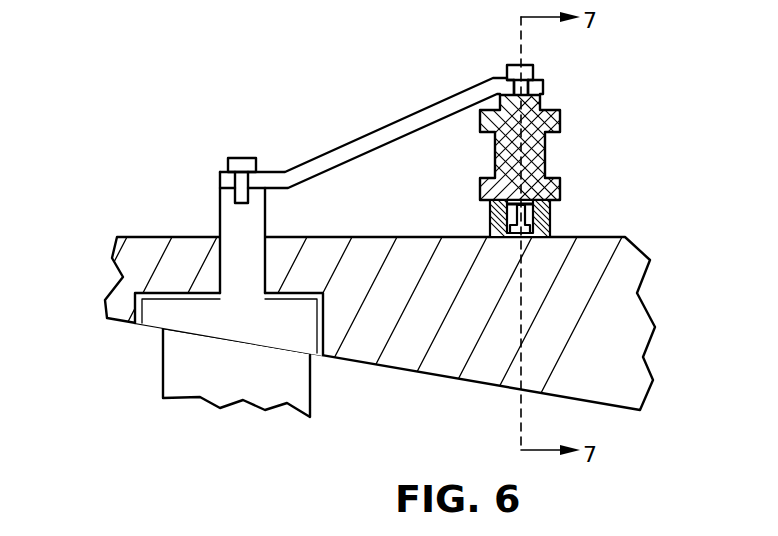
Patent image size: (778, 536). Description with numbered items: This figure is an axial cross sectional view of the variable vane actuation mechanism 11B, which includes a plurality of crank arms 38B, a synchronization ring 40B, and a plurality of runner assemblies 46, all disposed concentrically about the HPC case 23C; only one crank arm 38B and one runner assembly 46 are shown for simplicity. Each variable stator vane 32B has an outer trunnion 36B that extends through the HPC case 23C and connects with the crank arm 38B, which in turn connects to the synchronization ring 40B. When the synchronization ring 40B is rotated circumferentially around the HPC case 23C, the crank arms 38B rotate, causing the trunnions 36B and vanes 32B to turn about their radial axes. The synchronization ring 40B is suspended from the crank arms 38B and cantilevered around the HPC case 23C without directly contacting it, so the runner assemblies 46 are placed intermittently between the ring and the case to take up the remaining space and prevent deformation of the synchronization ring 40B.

The variable vane actuation mechanism 11B is at (281, 105).
The crank arm 38B is at (387, 124).
The synchronization ring 40B is at (560, 118).
The runner assembly 46 is at (550, 213).
The HPC case 23C is at (607, 237).
The outer trunnion 36B is at (266, 222).
The variable stator vane 32B is at (160, 377).